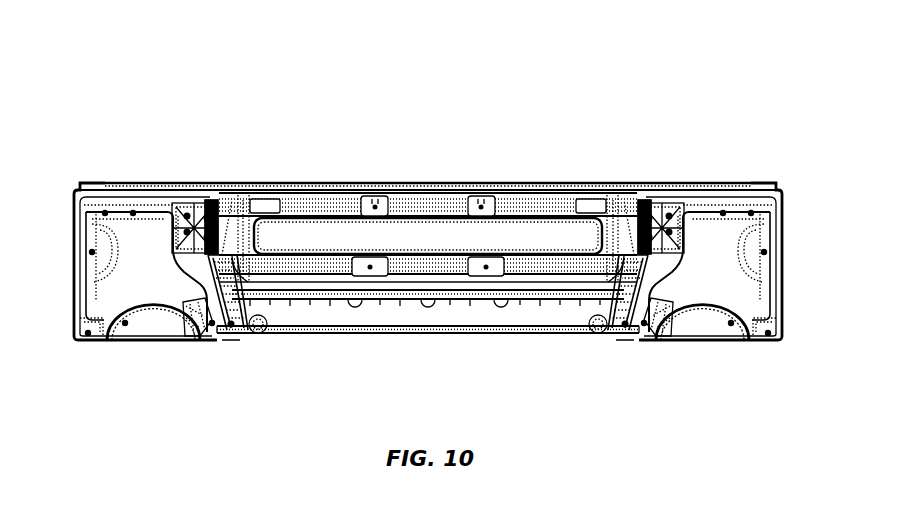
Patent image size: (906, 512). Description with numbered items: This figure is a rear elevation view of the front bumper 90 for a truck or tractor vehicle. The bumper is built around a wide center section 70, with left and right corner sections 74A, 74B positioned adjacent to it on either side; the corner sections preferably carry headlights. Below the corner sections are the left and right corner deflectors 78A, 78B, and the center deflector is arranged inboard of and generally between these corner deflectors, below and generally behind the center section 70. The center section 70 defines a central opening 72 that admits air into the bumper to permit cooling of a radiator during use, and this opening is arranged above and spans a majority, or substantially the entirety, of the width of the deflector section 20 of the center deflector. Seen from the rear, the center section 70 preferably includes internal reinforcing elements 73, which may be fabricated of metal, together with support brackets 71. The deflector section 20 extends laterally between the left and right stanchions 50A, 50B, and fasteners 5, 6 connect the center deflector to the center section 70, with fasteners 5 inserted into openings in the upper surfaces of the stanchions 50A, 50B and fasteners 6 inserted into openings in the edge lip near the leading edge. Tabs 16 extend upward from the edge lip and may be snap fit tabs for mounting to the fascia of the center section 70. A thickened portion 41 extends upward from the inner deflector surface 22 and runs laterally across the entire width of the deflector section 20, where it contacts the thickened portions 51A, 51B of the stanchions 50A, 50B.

The front bumper 90 is at (140, 93).
The left corner section 74A is at (68, 200).
The right corner section 74B is at (785, 208).
The left corner deflector 78A is at (140, 342).
The right corner deflector 78B is at (715, 342).
The fasteners 5 is at (218, 250).
The support brackets 71 is at (229, 282).
The internal reinforcing elements 73 is at (285, 205).
The fasteners 6 is at (355, 298).
The central opening 72 is at (397, 230).
The center section 70 is at (510, 190).
The tabs 16 is at (363, 330).
The thickened portion 41 is at (405, 332).
The deflector section 20 is at (478, 316).
The inner deflector surface 22 is at (525, 330).
The thickened portion of left stanchion 51A is at (267, 335).
The thickened portion of right stanchion 51B is at (585, 330).
The left stanchion 50A is at (227, 335).
The right stanchion 50B is at (630, 332).